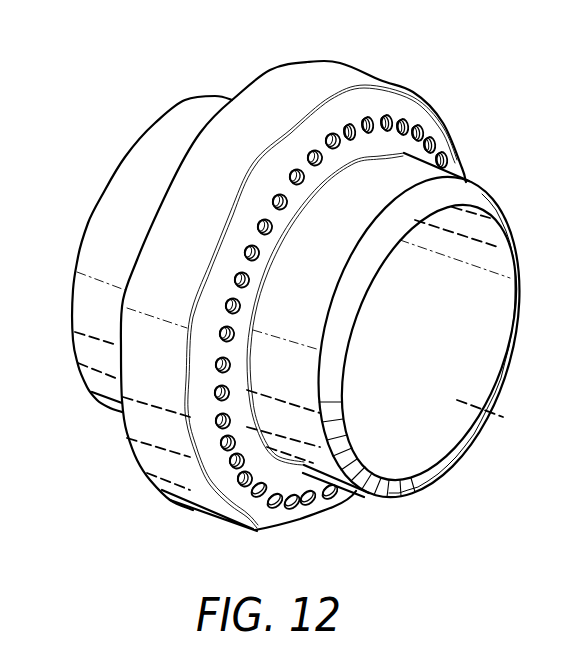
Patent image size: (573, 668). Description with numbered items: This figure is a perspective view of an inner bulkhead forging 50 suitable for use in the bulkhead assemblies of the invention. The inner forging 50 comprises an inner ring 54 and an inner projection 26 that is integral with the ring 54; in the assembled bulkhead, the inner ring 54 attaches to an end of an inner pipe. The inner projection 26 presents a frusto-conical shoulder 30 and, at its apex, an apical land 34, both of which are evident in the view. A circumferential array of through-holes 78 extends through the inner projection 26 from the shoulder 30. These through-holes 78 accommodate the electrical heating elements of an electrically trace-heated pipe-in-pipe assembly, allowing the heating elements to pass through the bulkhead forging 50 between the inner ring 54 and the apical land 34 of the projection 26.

The inner projection 26 is at (412, 90).
The frusto-conical shoulder 30 is at (447, 138).
The apical land 34 is at (313, 68).
The inner forging 50 is at (141, 95).
The inner ring 54 is at (82, 312).
The through-holes 78 is at (297, 170).